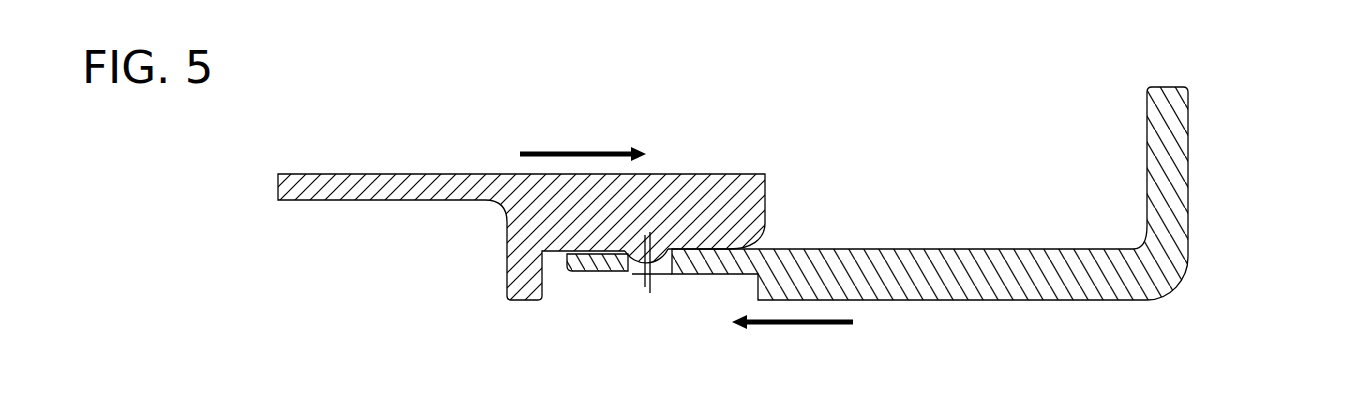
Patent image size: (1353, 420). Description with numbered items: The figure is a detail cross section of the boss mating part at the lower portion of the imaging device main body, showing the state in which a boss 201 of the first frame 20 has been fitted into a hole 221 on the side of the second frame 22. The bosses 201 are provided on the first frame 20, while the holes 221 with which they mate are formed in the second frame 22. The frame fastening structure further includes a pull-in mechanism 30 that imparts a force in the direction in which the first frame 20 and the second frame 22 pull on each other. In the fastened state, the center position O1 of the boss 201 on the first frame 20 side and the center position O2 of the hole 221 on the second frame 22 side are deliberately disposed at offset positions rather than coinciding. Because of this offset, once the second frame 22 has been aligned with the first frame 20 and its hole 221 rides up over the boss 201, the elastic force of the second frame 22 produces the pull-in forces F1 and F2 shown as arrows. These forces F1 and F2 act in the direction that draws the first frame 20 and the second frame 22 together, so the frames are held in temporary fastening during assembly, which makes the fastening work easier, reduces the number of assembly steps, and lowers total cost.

The first frame 20 is at (477, 168).
The boss 201 is at (669, 239).
The second frame 22 is at (900, 246).
The hole 221 is at (666, 279).
The pull-in mechanism 30 is at (618, 264).
The center position of boss O1 is at (645, 286).
The center position of hole O2 is at (649, 292).
The pull-in force F1 is at (583, 134).
The pull-in force F2 is at (792, 343).